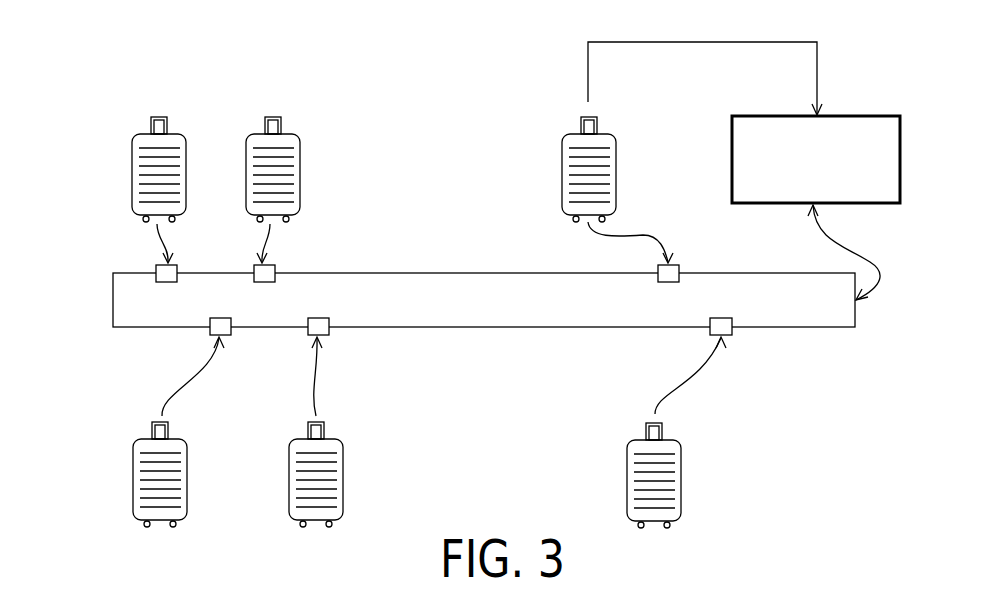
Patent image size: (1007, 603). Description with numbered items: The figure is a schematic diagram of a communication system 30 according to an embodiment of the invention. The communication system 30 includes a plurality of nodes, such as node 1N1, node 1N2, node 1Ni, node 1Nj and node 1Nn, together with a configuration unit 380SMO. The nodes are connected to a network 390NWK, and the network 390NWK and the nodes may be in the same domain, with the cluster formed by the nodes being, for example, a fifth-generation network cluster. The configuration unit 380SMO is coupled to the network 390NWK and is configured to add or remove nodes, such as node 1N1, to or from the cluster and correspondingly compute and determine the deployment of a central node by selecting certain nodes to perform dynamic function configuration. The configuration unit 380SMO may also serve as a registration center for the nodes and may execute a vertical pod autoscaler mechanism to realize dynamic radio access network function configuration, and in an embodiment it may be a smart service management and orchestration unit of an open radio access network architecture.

The communication system 30 is at (135, 86).
The node 1N1 is at (184, 134).
The node 1N2 is at (296, 134).
The node 1Ni is at (184, 440).
The node 1Nj is at (340, 440).
The node 1Nn is at (678, 441).
The configuration unit 380SMO is at (862, 172).
The network 390NWK is at (537, 312).